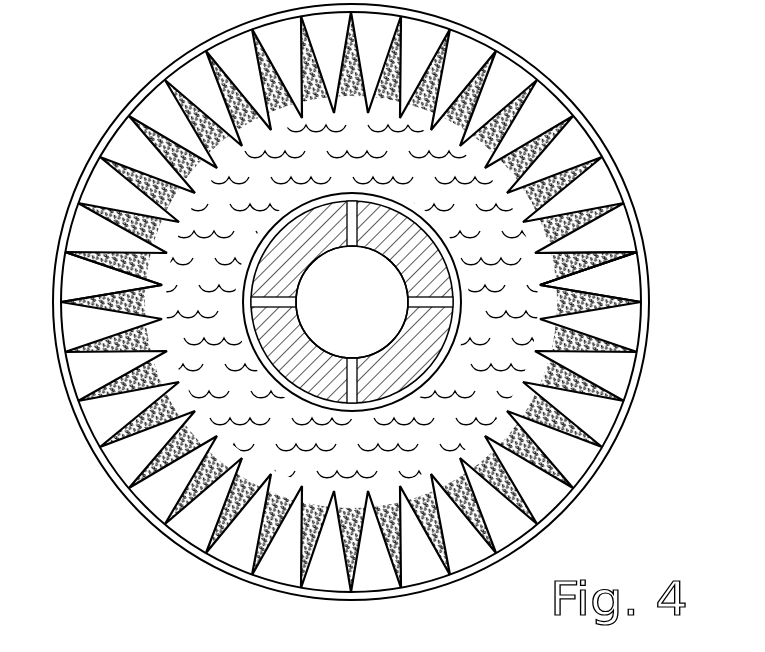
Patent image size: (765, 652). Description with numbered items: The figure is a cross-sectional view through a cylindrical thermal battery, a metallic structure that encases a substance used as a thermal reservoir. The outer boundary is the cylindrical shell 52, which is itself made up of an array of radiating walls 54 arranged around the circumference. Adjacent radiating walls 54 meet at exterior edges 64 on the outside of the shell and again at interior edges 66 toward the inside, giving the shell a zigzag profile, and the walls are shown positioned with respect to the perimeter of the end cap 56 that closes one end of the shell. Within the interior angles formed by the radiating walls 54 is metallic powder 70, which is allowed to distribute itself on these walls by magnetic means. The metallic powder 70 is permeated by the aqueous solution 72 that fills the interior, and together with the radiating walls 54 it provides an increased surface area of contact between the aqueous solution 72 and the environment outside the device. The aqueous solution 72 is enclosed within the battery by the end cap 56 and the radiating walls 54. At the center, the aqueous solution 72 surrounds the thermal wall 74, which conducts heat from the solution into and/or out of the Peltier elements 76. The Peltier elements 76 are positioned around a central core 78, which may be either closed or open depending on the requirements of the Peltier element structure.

The cylindrical shell 52 is at (567, 458).
The radiating walls 54 is at (578, 383).
The end cap 56 is at (504, 105).
The exterior edges 64 is at (500, 162).
The interior edges 66 is at (493, 252).
The metallic powder 70 is at (597, 297).
The aqueous solution 72 is at (263, 147).
The thermal wall 74 is at (157, 284).
The Peltier elements 76 is at (297, 270).
The central core 78 is at (336, 299).